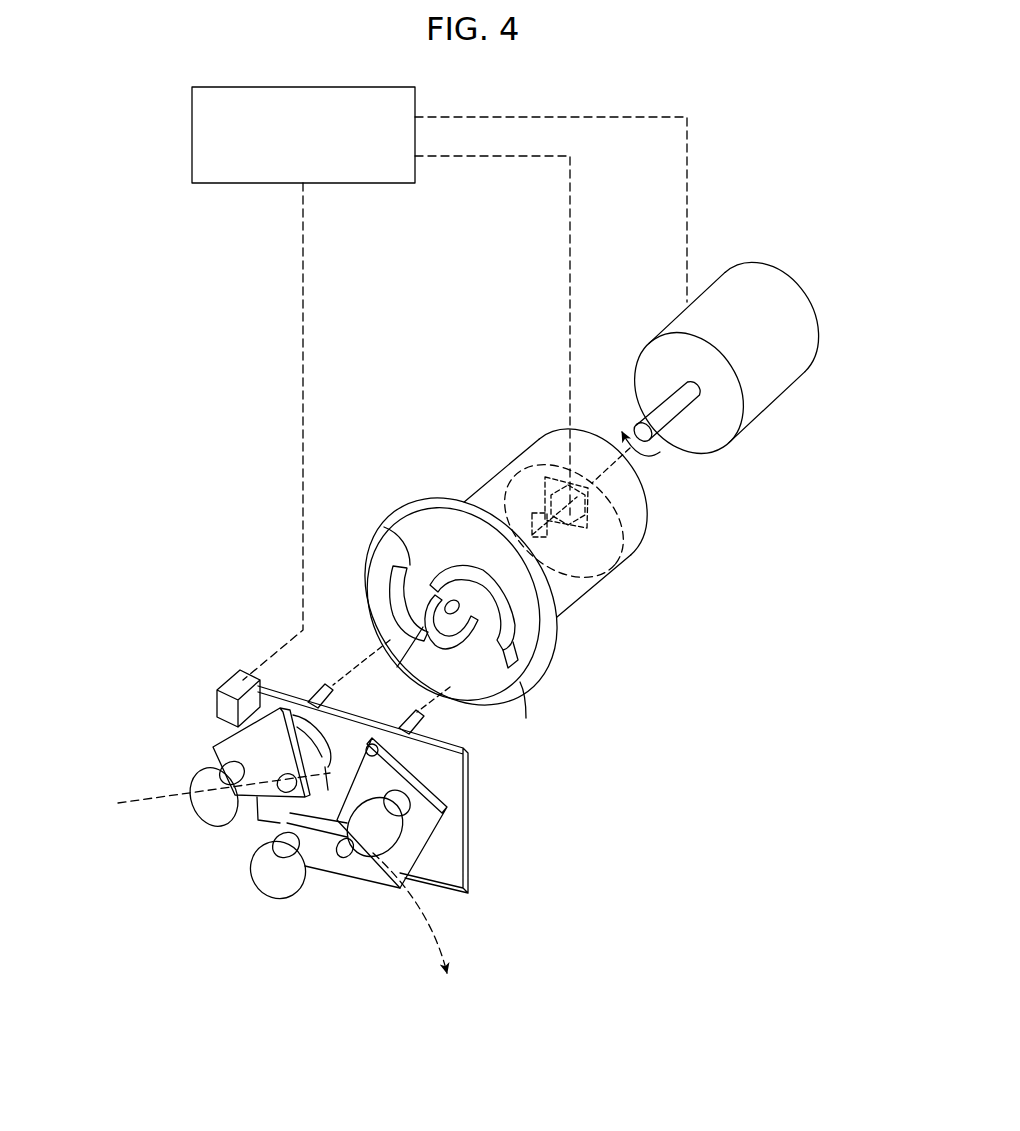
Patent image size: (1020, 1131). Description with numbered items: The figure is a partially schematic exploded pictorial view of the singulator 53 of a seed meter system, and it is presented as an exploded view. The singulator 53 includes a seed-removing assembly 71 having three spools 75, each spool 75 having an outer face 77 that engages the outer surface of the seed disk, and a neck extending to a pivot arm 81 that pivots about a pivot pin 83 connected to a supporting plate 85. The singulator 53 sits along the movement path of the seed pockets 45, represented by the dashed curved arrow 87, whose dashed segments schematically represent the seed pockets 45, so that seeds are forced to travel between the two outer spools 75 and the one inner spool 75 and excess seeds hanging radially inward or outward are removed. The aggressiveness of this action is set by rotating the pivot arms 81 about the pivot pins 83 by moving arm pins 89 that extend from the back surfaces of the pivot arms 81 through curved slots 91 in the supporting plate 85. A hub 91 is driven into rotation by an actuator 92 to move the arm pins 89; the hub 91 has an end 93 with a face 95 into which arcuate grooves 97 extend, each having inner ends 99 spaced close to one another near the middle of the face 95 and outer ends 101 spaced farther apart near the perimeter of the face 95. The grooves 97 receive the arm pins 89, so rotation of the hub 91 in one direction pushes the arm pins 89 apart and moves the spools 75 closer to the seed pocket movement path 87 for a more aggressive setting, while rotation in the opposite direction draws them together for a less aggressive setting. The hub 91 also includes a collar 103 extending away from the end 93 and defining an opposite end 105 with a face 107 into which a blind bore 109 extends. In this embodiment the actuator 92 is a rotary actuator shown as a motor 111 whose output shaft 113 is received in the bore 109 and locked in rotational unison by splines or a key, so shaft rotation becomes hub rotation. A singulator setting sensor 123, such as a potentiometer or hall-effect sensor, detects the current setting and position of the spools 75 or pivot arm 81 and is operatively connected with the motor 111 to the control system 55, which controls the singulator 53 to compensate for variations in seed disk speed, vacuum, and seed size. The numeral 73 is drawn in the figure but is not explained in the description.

The control system 55 is at (180, 133).
The actuator 92 is at (701, 330).
The motor 111 is at (772, 378).
The output shaft 113 is at (668, 405).
The blind bore 109 is at (540, 530).
The collar 103 is at (492, 496).
The opposite end 105 is at (618, 572).
The face 107 is at (600, 547).
The singulator setting sensor 123 is at (590, 495).
The cam assembly 73 is at (509, 616).
The end 93 is at (536, 684).
The face 95 is at (490, 697).
The grooves 97 is at (409, 590).
The inner ends 99 is at (458, 637).
The outer ends 101 is at (397, 523).
The hub 91 is at (570, 655).
The arm pins 89 is at (333, 695).
The supporting plate 85 is at (474, 850).
The pivot arm 81 is at (262, 752).
The spool 75 is at (193, 818).
The outer face 77 is at (181, 801).
The pivot pin 83 is at (257, 798).
The seed-removing assembly 71 is at (315, 802).
The singulator 53 is at (314, 802).
The seed pockets 45 is at (158, 787).
The seed pocket movement path 87 is at (438, 947).